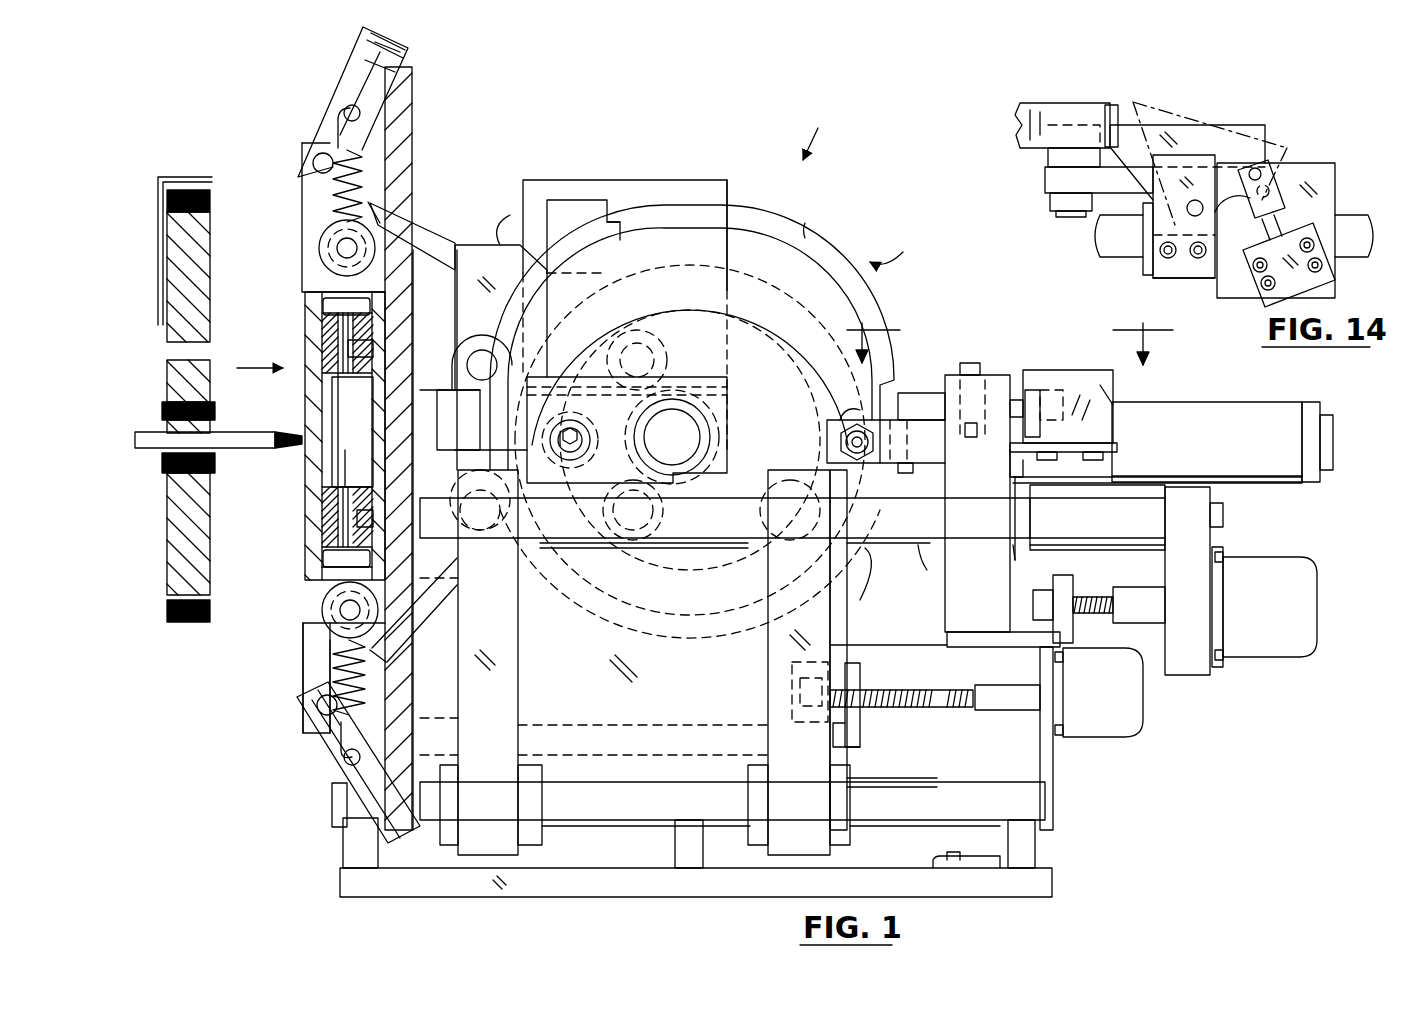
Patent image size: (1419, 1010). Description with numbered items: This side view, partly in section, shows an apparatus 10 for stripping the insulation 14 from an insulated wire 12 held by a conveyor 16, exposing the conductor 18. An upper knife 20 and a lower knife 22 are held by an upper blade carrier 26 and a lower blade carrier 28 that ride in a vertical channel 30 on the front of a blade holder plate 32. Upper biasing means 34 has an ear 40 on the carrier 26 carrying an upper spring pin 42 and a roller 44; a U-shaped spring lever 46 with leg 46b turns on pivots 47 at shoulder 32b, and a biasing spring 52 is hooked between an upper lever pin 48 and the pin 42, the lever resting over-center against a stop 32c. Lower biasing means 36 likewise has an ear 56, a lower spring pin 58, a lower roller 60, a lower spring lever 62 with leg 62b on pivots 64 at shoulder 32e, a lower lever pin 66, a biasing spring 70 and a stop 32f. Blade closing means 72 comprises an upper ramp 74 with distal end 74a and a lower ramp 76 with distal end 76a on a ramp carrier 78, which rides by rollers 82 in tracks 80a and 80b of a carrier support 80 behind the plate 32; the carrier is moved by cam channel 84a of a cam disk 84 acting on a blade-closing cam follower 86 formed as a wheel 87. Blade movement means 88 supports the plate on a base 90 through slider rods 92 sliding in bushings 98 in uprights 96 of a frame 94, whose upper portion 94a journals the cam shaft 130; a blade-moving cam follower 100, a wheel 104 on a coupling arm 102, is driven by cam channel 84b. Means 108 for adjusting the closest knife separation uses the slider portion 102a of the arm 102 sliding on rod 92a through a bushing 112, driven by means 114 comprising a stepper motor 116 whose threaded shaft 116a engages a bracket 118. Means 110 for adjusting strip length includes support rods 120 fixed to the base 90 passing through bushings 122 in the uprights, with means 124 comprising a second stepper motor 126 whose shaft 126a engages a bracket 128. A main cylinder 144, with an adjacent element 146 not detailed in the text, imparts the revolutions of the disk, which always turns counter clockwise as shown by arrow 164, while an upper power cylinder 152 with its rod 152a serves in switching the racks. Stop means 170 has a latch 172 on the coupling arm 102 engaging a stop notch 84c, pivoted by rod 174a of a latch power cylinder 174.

In FIG. 1, the apparatus 10 is at (803, 137).
In FIG. 1, the insulated wire 12 is at (235, 430).
In FIG. 1, the insulation 14 is at (240, 445).
In FIG. 1, the conveyor 16 is at (153, 370).
In FIG. 1, the conductor 18 is at (285, 445).
In FIG. 1, the upper knife 20 is at (332, 392).
In FIG. 1, the lower knife 22 is at (335, 470).
In FIG. 1, the upper blade carrier 26 is at (322, 340).
In FIG. 1, the lower blade carrier 28 is at (322, 516).
In FIG. 1, the channel 30 is at (305, 300).
In FIG. 1, the blade holder plate 32 is at (412, 72).
In FIG. 1, the shoulder 32b is at (302, 145).
In FIG. 1, the stop 32c is at (365, 62).
In FIG. 1, the shoulder 32e is at (300, 680).
In FIG. 1, the stop 32f is at (332, 800).
In FIG. 1, the upper biasing means 34 is at (290, 196).
In FIG. 1, the lower biasing means 36 is at (298, 665).
In FIG. 1, the ear 40 is at (320, 271).
In FIG. 1, the upper spring pin 42 is at (337, 253).
In FIG. 1, the roller 44 is at (320, 236).
In FIG. 1, the spring lever 46 is at (396, 38).
In FIG. 1, the leg 46b is at (360, 52).
In FIG. 1, the pivots 47 is at (312, 160).
In FIG. 1, the upper lever pin 48 is at (340, 110).
In FIG. 1, the biasing spring 52 is at (365, 155).
In FIG. 1, the ear 56 is at (322, 600).
In FIG. 1, the lower spring pin 58 is at (340, 608).
In FIG. 1, the lower roller 60 is at (328, 640).
In FIG. 1, the lower spring lever 62 is at (320, 755).
In FIG. 1, the leg 62b is at (315, 738).
In FIG. 1, the pivots 64 is at (317, 705).
In FIG. 1, the lower lever pin 66 is at (345, 765).
In FIG. 1, the biasing spring 70 is at (370, 700).
In FIG. 1, the blade closing means 72 is at (498, 246).
In FIG. 1, the upper ramp 74 is at (458, 252).
In FIG. 1, the distal end 74a is at (382, 215).
In FIG. 1, the lower ramp 76 is at (436, 610).
In FIG. 1, the distal end 76a is at (390, 658).
In FIG. 1, the ramp carrier 78 is at (500, 208).
In FIG. 1, the carrier support 80 is at (430, 382).
In FIG. 1, the track 80a is at (727, 385).
In FIG. 1, the track 80b is at (478, 468).
In FIG. 1, the rollers 82 is at (476, 550).
In FIG. 1, the cam disk 84 is at (810, 242).
In FIG. 14, the cam disk 84 is at (1050, 100).
In FIG. 1, the cam channel 84a is at (677, 282).
In FIG. 1, the cam channel 84b is at (800, 230).
In FIG. 1, the stop notch 84c is at (913, 470).
In FIG. 14, the stop notch 84c is at (1112, 105).
In FIG. 1, the blade-closing cam follower 86 is at (566, 416).
In FIG. 1, the wheel 87 is at (520, 408).
In FIG. 1, the blade movement means 88 is at (990, 368).
In FIG. 1, the base 90 is at (1052, 882).
In FIG. 1, the slider rods 92 is at (708, 576).
In FIG. 1, the slider rod 92a is at (885, 548).
In FIG. 14, the slider rod 92a is at (1122, 250).
In FIG. 1, the frame 94 is at (838, 650).
In FIG. 1, the upper portion 94a is at (728, 180).
In FIG. 1, the uprights 96 is at (518, 670).
In FIG. 1, the bushings 98 is at (536, 577).
In FIG. 1, the blade-moving cam follower 100 is at (835, 418).
In FIG. 1, the coupling arm 102 is at (827, 445).
In FIG. 14, the coupling arm 102 is at (1045, 184).
In FIG. 1, the slider portion 102a is at (1018, 575).
In FIG. 14, the slider portion 102a is at (1192, 282).
In FIG. 1, the wheel 104 is at (862, 420).
In FIG. 14, the wheel 104 is at (1047, 158).
In FIG. 1, the means for adjusting closest separation 108 is at (1322, 614).
In FIG. 1, the means for adjusting length of insulation 110 is at (1155, 720).
In FIG. 1, the bushing 112 is at (925, 575).
In FIG. 14, the bushing 112 is at (1142, 275).
In FIG. 1, the means for causing sliding 114 is at (1140, 672).
In FIG. 1, the stepper motor 116 is at (1312, 577).
In FIG. 1, the driven shaft 116a is at (1092, 595).
In FIG. 1, the bracket 118 is at (1012, 648).
In FIG. 1, the support rods 120 is at (685, 784).
In FIG. 1, the bushings 122 is at (542, 840).
In FIG. 1, the means for causing sliding 124 is at (1160, 748).
In FIG. 1, the second stepper motor 126 is at (1092, 735).
In FIG. 1, the driven shaft 126a is at (968, 707).
In FIG. 1, the bracket 128 is at (862, 745).
In FIG. 1, the cam shaft 130 is at (700, 433).
In FIG. 1, the main cylinder 144 is at (1268, 488).
In FIG. 1, the rail end 146 is at (1286, 412).
In FIG. 1, the upper power cylinder 152 is at (556, 197).
In FIG. 1, the rod 152a is at (612, 220).
In FIG. 1, the arrow 164 is at (900, 248).
In FIG. 1, the stop means 170 is at (1072, 365).
In FIG. 14, the stop means 170 is at (1333, 157).
In FIG. 1, the latch 172 is at (933, 392).
In FIG. 14, the latch 172 is at (1252, 125).
In FIG. 1, the latch power cylinder 174 is at (1113, 395).
In FIG. 14, the latch power cylinder 174 is at (1330, 288).
In FIG. 14, the rod 174a is at (1300, 200).